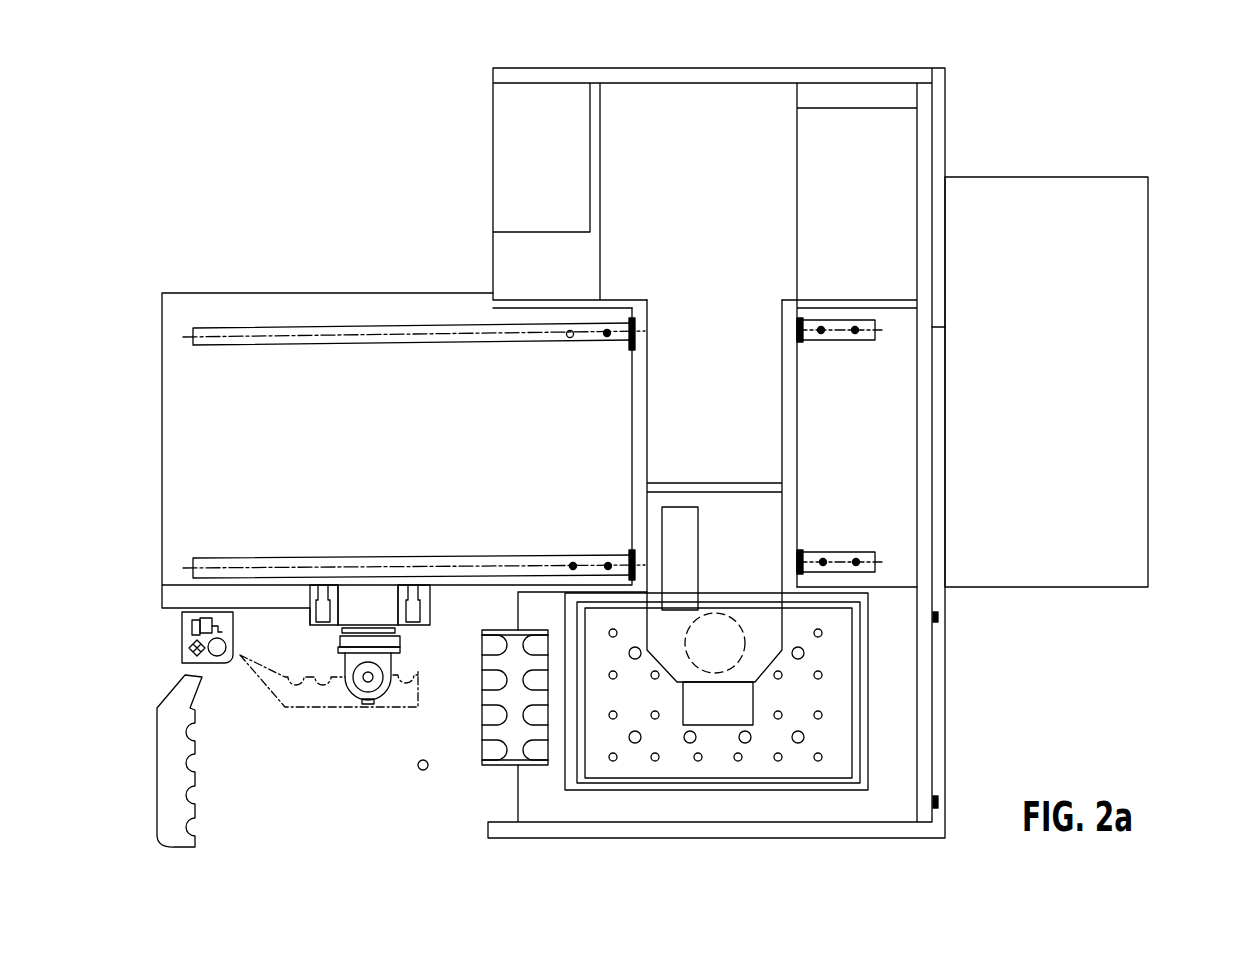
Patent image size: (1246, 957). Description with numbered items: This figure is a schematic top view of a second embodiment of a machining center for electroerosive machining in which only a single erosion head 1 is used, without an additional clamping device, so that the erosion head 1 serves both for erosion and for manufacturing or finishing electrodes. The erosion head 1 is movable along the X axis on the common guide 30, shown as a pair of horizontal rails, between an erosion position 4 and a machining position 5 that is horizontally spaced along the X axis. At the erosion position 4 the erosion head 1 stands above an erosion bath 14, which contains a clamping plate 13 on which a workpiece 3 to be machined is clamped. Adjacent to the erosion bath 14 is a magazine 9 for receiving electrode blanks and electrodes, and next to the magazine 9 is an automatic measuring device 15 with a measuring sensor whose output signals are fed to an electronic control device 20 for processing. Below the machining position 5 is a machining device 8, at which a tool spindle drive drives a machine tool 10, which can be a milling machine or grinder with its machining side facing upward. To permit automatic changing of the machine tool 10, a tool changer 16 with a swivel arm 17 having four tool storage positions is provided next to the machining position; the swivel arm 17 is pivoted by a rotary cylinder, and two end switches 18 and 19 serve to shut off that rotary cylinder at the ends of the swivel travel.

The erosion head 1 is at (768, 444).
The workpiece 3 is at (743, 702).
The erosion position 4 is at (885, 512).
The machining position 5 is at (220, 487).
The machining device 8 is at (337, 652).
The magazine 9 is at (481, 732).
The machine tool 10 is at (392, 668).
The clamping plate 13 is at (833, 660).
The erosion bath 14 is at (856, 752).
The automatic measuring device 15 is at (417, 766).
The tool changer 16 is at (185, 632).
The swivel arm 17 is at (165, 773).
The end switch 18 is at (190, 622).
The end switch 19 is at (186, 650).
The electronic control device 20 is at (1130, 458).
The guide 30 is at (272, 340).